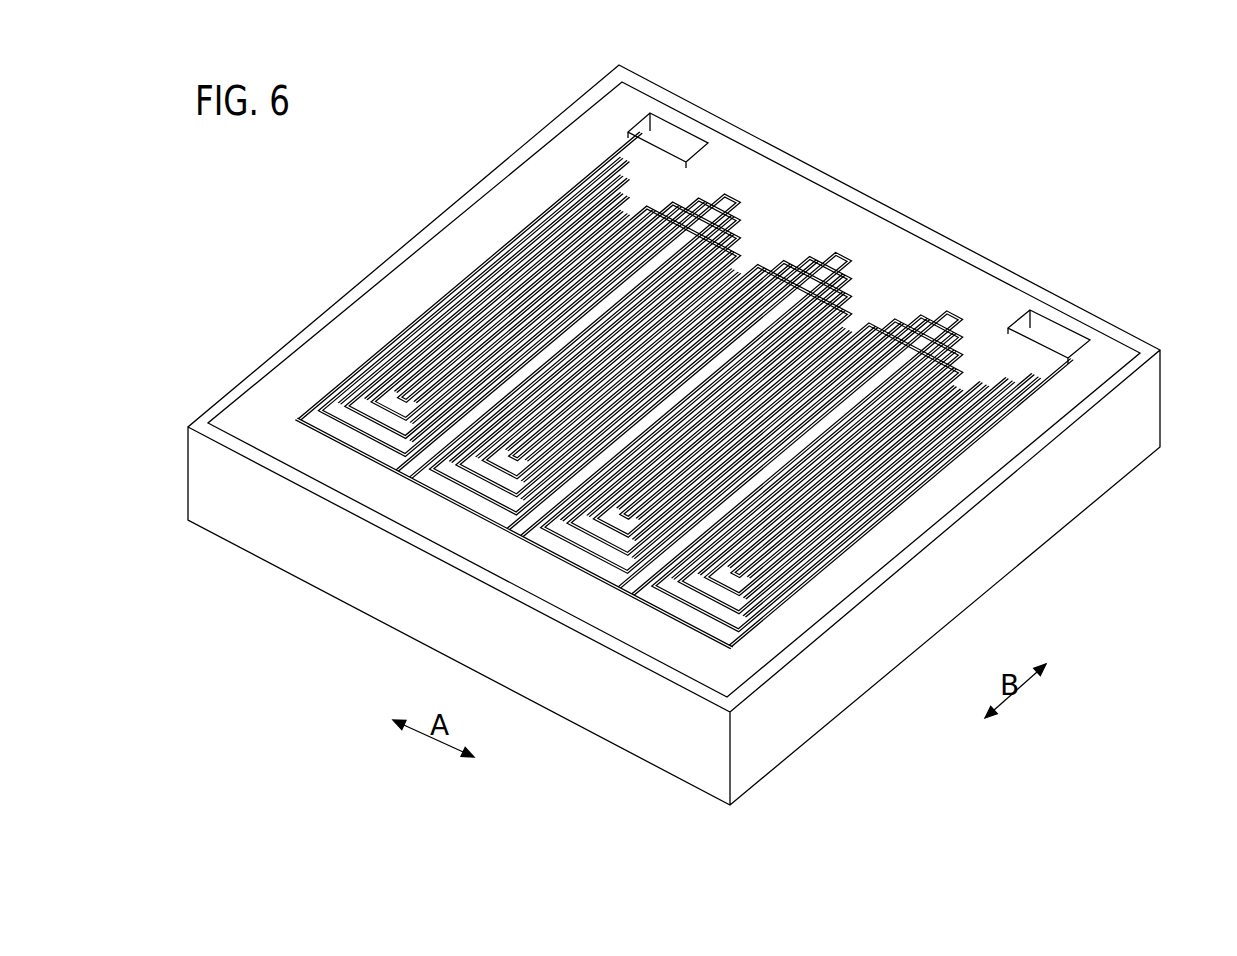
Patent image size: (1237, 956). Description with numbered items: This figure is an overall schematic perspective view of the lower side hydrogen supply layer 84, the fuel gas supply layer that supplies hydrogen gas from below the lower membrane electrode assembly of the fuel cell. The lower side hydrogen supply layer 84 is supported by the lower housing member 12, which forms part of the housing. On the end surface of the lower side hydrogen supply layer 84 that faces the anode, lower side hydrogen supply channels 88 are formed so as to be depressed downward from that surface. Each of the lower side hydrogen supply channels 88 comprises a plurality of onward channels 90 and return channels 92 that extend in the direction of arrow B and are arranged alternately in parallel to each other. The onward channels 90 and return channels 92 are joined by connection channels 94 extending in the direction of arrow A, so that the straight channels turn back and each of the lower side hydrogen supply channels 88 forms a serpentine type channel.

The lower housing member 12 is at (1147, 398).
The lower side hydrogen supply layer 84 is at (1104, 350).
The lower side hydrogen supply channels 88 is at (757, 205).
The onward channels 90 is at (871, 312).
The return channels 92 is at (500, 250).
The connection channels 94 is at (735, 198).